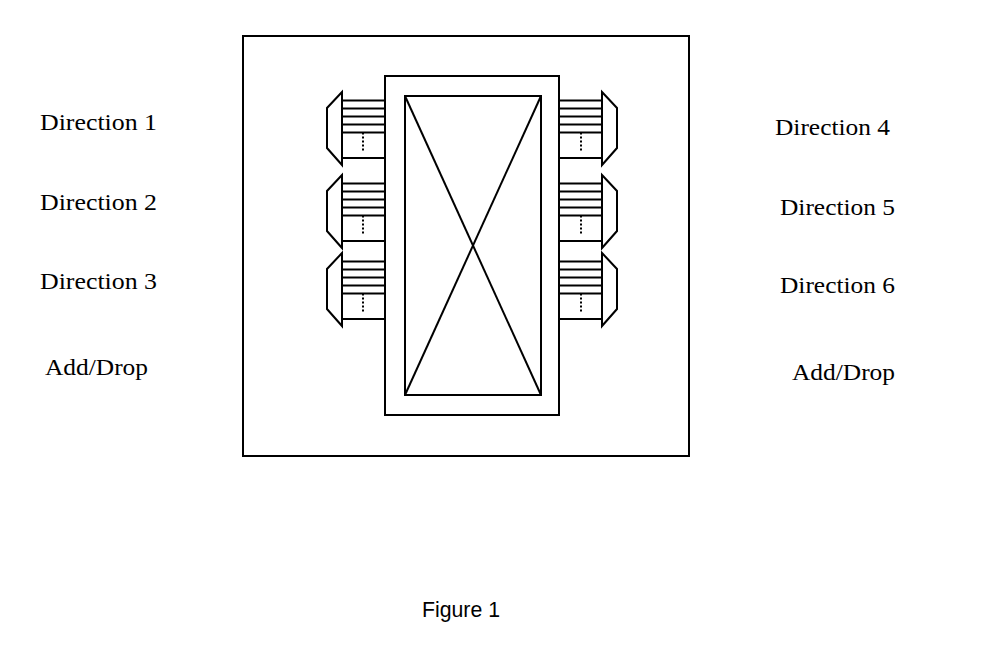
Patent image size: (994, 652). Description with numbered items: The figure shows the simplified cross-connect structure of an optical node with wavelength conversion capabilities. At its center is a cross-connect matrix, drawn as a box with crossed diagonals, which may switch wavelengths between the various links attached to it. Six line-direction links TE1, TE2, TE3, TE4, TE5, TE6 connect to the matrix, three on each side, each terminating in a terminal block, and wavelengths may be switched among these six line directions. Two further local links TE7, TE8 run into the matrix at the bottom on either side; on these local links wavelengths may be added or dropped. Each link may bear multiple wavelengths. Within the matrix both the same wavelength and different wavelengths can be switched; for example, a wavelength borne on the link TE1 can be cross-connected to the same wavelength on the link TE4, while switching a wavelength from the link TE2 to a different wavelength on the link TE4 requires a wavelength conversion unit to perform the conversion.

The line direction link TE1 is at (327, 127).
The line direction link TE2 is at (327, 209).
The line direction link TE3 is at (327, 291).
The line direction link TE4 is at (777, 127).
The line direction link TE5 is at (778, 208).
The line direction link TE6 is at (777, 290).
The local link TE7 is at (385, 370).
The local link TE8 is at (559, 368).